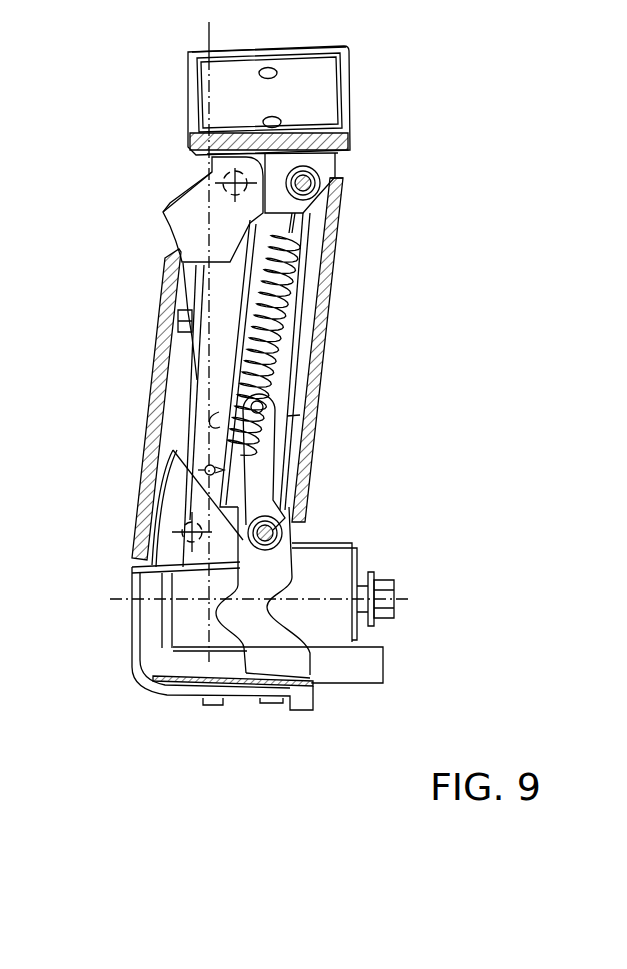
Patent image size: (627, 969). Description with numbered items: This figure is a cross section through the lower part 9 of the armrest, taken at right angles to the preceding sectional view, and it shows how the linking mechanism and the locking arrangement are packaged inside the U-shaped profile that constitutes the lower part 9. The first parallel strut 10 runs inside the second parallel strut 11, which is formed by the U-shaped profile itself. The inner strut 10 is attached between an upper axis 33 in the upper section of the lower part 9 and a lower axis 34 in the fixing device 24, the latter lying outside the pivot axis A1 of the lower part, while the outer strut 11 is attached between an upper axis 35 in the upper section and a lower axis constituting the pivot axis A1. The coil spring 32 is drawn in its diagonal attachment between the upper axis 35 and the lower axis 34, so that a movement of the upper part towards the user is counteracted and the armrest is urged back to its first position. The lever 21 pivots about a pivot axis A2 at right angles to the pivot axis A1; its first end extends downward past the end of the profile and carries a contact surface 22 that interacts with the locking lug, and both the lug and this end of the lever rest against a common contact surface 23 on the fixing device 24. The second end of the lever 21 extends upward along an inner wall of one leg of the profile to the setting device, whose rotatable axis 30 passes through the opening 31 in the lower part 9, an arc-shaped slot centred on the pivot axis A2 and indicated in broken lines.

The lower part 9 is at (335, 255).
The first parallel strut 10 is at (222, 291).
The second parallel strut 11 is at (158, 373).
The lever 21 is at (268, 458).
The contact surface 22 is at (267, 672).
The common contact surface 23 is at (353, 678).
The fixing device 24 is at (188, 639).
The axis of the setting device 30 is at (268, 405).
The opening 31 is at (305, 416).
The coil spring 32 is at (280, 311).
The upper axis 33 is at (223, 177).
The lower axis 34 is at (179, 523).
The upper axis 35 is at (320, 180).
The pivot axis of the armrest A1 is at (396, 598).
The pivot axis of the lever A2 is at (298, 530).